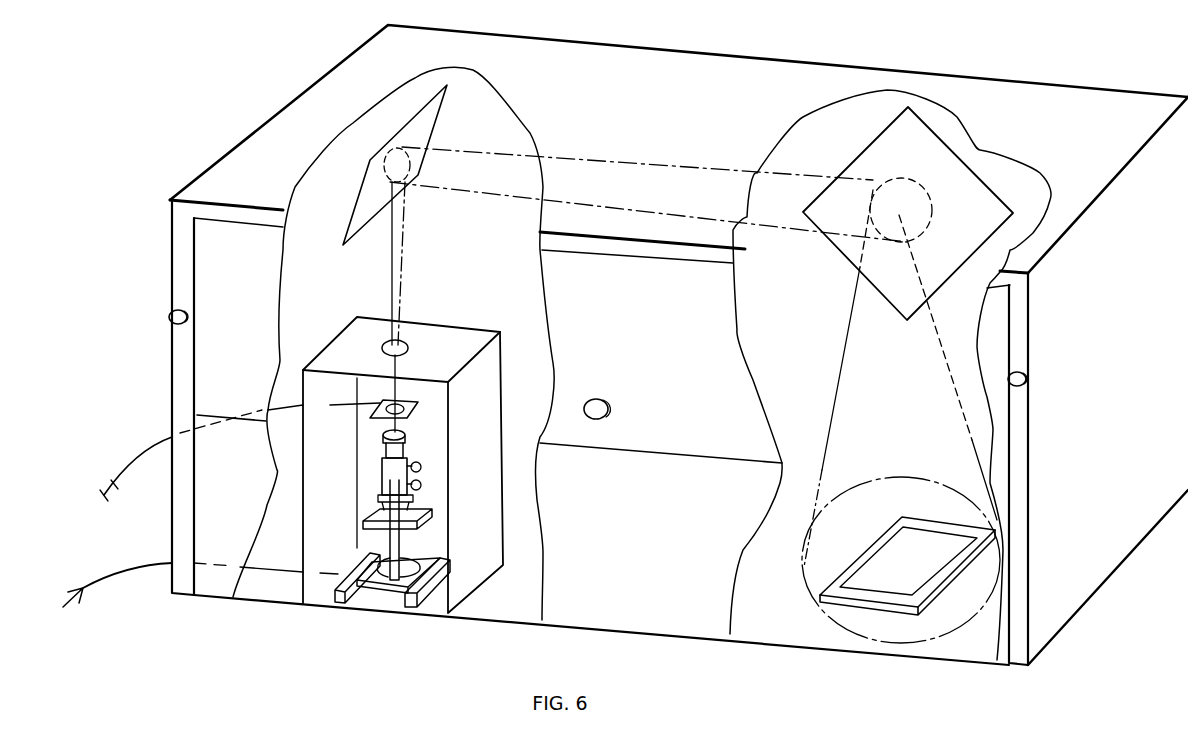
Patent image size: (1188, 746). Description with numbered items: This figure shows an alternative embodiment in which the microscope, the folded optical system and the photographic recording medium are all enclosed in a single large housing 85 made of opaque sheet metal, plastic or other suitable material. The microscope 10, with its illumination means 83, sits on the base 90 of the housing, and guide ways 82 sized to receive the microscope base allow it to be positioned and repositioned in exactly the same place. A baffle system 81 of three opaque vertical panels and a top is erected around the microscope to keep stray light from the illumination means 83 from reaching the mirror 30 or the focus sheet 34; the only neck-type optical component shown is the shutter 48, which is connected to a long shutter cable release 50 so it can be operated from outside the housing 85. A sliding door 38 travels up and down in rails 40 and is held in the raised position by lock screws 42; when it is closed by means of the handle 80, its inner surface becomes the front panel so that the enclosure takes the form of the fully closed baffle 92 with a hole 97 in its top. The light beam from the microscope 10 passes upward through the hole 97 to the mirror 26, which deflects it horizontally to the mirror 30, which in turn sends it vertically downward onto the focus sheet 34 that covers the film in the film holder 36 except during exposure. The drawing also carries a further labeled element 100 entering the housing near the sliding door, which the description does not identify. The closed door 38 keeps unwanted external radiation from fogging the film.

The microscope 10 is at (392, 530).
The mirror 26 is at (428, 127).
The mirror 30 is at (985, 205).
The focus sheet 34 is at (866, 576).
The film holder 36 is at (822, 602).
The sliding door 38 is at (205, 373).
The rails 40 is at (180, 518).
The lock screws 42 is at (170, 312).
The shutter 48 is at (426, 409).
The shutter cable release 50 is at (152, 454).
The handle 80 is at (612, 404).
The baffle system 81 is at (481, 572).
The guide ways 82 is at (338, 597).
The illumination means 83 is at (410, 560).
The housing 85 is at (762, 57).
The base 90 is at (523, 610).
The baffle 92 is at (455, 332).
The hole 97 is at (386, 345).
The laser beam 100 is at (98, 585).